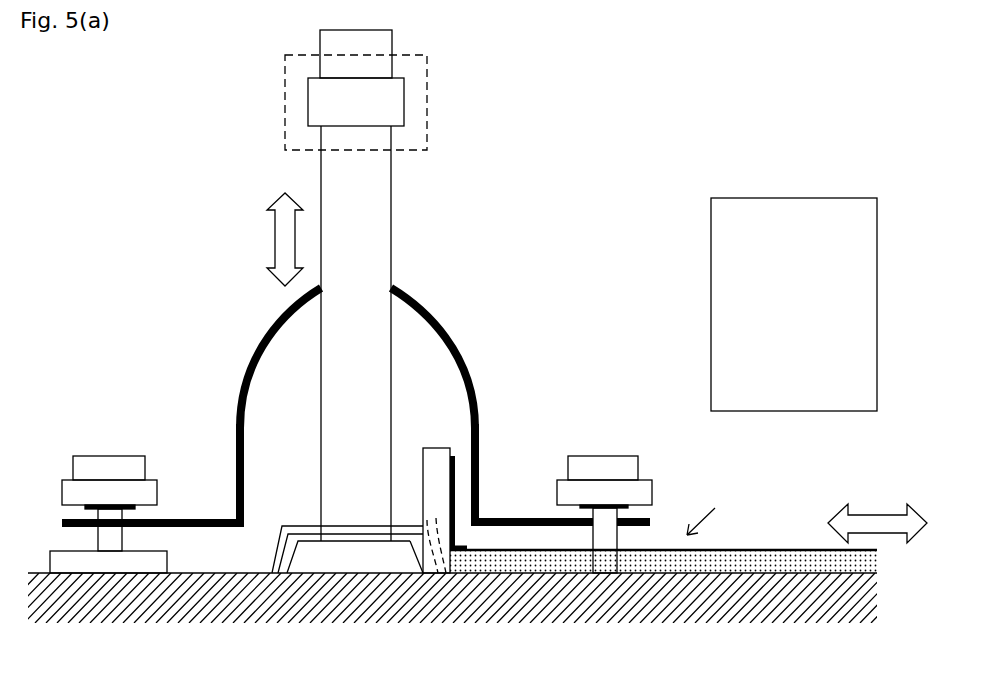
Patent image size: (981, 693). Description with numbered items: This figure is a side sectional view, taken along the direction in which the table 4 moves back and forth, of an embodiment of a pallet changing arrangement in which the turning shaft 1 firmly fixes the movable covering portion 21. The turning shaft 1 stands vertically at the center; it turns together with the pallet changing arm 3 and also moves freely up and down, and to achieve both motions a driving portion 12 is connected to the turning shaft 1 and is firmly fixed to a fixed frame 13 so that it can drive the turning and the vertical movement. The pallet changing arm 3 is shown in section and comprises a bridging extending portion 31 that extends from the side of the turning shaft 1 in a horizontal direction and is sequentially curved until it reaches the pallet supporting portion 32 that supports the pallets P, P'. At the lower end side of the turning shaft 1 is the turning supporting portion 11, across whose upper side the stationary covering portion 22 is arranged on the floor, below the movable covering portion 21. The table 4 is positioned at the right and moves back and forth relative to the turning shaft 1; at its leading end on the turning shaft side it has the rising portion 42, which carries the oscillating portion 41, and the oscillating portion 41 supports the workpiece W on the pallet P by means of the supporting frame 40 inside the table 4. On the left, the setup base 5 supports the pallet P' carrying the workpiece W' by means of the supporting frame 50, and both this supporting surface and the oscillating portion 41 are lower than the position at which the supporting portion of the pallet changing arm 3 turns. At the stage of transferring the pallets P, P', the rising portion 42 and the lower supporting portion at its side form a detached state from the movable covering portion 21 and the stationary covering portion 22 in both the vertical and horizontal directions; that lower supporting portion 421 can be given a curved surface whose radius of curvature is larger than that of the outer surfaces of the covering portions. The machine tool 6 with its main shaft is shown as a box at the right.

The turning shaft 1 is at (357, 183).
The turning supporting portion 11 is at (317, 555).
The driving portion 12 is at (362, 95).
The fixed frame 13 is at (277, 108).
The movable covering portion 21 is at (269, 537).
The stationary covering portion 22 is at (262, 557).
The pallet changing arm 3 is at (192, 282).
The bridging extending portion 31 is at (239, 375).
The pallet supporting portion 32 is at (199, 513).
The table 4 is at (663, 530).
The supporting frame 40 is at (595, 523).
The oscillating portion 41 is at (455, 542).
The rising portion 42 is at (432, 455).
The coating layer 421 is at (442, 488).
The setup base 5 is at (82, 555).
The supporting frame 50 is at (100, 528).
The machine tool 6 is at (734, 205).
The workpiece W is at (603, 418).
The pallet P is at (608, 426).
The workpiece W' is at (96, 420).
The pallet P' is at (117, 440).